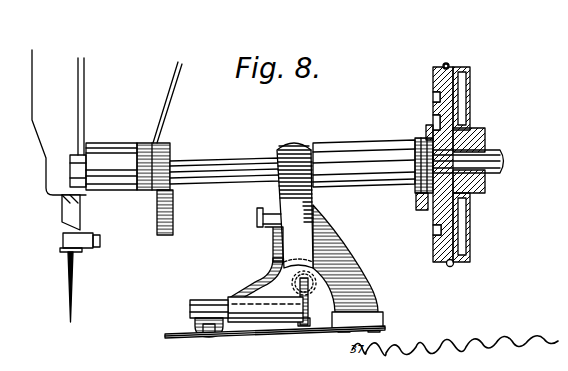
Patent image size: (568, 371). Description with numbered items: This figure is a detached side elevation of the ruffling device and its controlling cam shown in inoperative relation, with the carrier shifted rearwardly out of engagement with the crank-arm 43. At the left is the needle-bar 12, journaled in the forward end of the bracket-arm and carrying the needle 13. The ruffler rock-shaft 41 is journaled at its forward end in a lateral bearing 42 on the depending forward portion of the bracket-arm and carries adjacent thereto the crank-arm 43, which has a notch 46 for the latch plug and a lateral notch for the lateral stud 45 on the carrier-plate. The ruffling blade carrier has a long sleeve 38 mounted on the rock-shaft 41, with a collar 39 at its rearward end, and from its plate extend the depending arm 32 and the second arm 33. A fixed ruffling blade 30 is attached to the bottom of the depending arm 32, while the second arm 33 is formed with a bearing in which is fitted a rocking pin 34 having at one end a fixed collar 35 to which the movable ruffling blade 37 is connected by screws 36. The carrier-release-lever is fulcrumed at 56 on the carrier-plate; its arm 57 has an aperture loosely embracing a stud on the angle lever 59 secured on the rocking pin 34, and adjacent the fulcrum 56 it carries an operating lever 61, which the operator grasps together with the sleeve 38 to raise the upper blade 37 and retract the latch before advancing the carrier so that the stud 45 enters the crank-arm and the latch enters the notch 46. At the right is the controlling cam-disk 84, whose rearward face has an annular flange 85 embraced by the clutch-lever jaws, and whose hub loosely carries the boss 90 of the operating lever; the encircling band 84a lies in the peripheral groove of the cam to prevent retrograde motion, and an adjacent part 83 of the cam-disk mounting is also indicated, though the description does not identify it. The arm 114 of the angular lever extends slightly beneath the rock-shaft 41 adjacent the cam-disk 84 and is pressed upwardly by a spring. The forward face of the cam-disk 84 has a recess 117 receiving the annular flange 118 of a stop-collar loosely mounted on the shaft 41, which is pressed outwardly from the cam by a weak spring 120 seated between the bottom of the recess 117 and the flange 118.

The needle-bar 12 is at (62, 213).
The needle 13 is at (68, 282).
The fixed ruffling blade 30 is at (207, 333).
The depending arm 32 is at (372, 293).
The second arm 33 is at (265, 300).
The rocking pin 34 is at (244, 298).
The fixed collar 35 is at (209, 300).
The screws 36 is at (215, 333).
The movable ruffling blade 37 is at (176, 333).
The sleeve 38 is at (338, 152).
The collar 39 is at (418, 145).
The ruffler rock-shaft 41 is at (213, 163).
The lateral bearing 42 is at (103, 166).
The crank-arm 43 is at (170, 198).
The lateral stud 45 is at (255, 235).
The notch 46 is at (157, 213).
The fulcrum 56 is at (328, 260).
The arm 57 is at (310, 290).
The angle lever 59 is at (313, 313).
The operating lever 61 is at (305, 214).
The notch 83 is at (433, 96).
The cam-disk 84 is at (433, 68).
The encircling band 84a is at (447, 64).
The annular flange 85 is at (470, 72).
The boss 90 is at (474, 130).
The arm 114 is at (416, 202).
The recess 117 is at (434, 126).
The annular flange 118 is at (428, 128).
The weak spring 120 is at (440, 208).